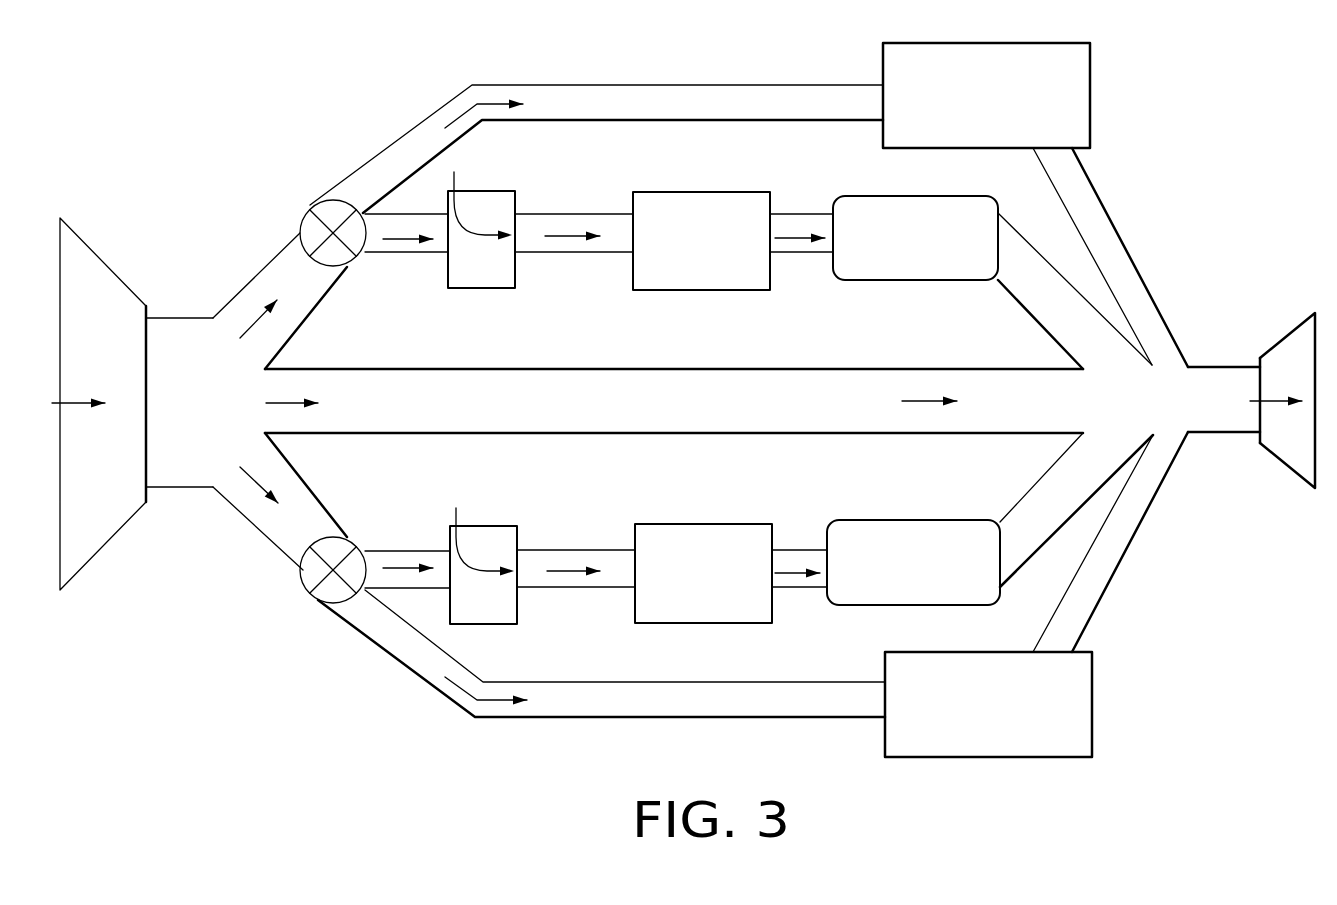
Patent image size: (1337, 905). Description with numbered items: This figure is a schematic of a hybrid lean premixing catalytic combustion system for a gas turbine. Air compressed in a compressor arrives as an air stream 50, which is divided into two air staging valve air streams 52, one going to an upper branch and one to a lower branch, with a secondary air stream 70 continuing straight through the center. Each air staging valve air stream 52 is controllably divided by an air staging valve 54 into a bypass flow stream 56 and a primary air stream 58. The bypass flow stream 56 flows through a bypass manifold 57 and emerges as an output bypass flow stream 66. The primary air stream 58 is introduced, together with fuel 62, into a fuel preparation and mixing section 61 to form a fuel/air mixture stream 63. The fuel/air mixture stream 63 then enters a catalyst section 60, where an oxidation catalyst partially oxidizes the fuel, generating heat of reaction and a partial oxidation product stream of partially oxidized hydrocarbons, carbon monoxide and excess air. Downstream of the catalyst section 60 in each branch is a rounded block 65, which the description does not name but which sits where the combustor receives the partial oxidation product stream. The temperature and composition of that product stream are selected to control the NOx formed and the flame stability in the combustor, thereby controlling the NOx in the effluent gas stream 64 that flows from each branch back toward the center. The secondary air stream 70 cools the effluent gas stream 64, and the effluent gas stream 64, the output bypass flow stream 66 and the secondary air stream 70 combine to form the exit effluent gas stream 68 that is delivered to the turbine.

The air stream 50 is at (67, 403).
The air staging valve air streams 52 is at (245, 325).
The air staging valve 54 is at (302, 233).
The bypass flow stream 56 is at (490, 102).
The bypass manifold 57 is at (1090, 113).
The primary air stream 58 is at (399, 241).
The catalyst section 60 is at (718, 256).
The fuel preparation and mixing section 61 is at (500, 285).
The fuel 62 is at (448, 192).
The fuel/air mixture stream 63 is at (557, 236).
The effluent gas stream 64 is at (1050, 303).
The catalytic reactor 65 is at (930, 256).
The output bypass flow stream 66 is at (1133, 282).
The exit effluent gas stream 68 is at (1258, 402).
The secondary air stream 70 is at (913, 403).